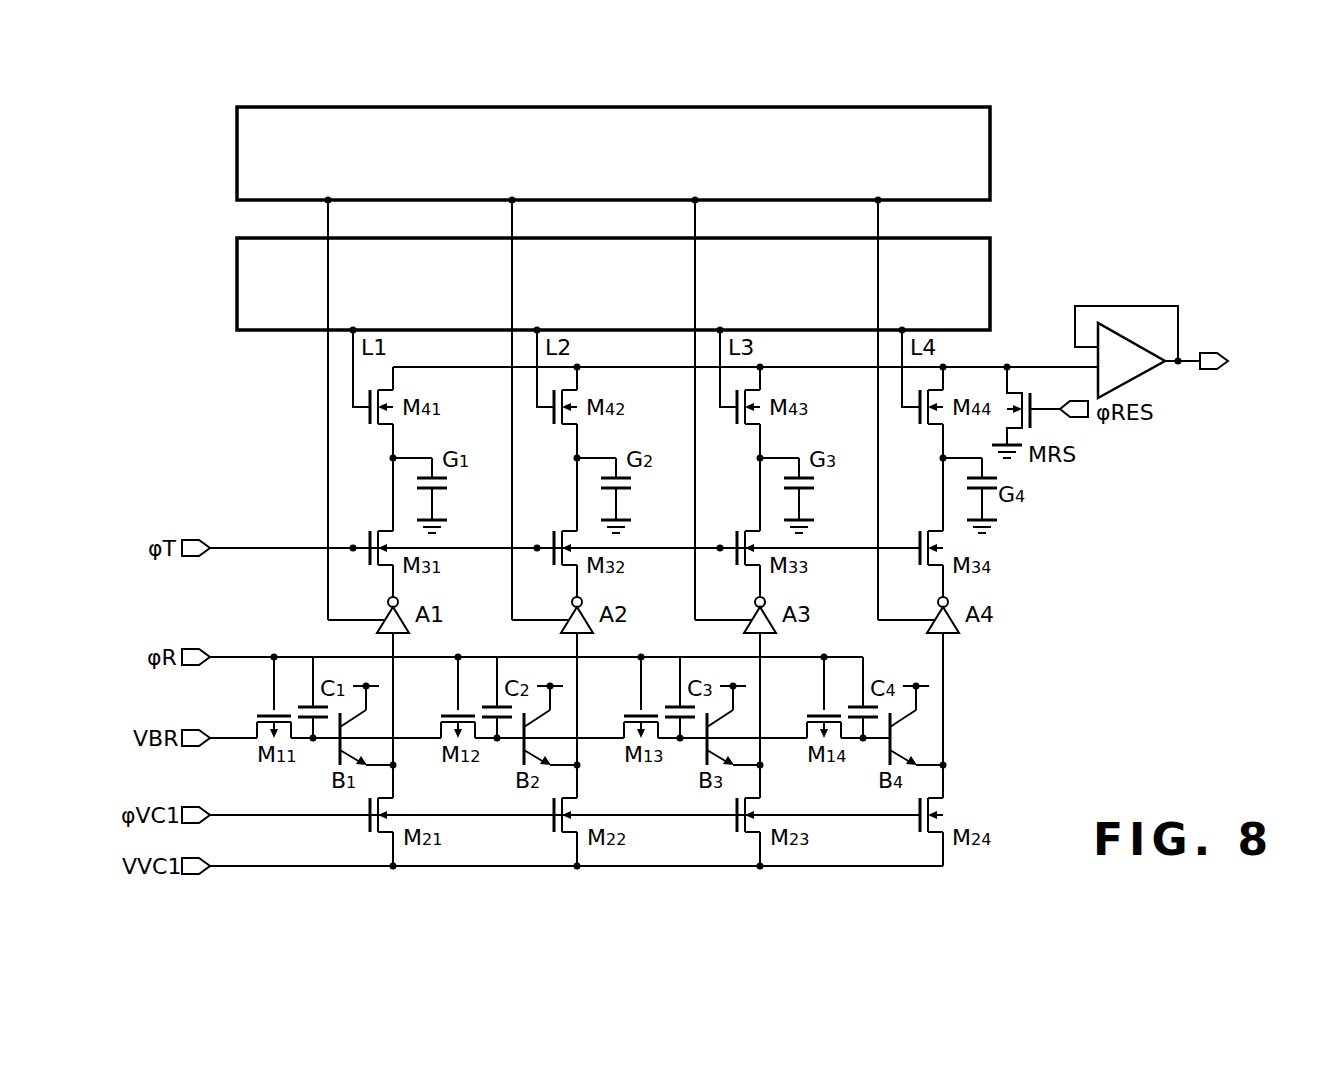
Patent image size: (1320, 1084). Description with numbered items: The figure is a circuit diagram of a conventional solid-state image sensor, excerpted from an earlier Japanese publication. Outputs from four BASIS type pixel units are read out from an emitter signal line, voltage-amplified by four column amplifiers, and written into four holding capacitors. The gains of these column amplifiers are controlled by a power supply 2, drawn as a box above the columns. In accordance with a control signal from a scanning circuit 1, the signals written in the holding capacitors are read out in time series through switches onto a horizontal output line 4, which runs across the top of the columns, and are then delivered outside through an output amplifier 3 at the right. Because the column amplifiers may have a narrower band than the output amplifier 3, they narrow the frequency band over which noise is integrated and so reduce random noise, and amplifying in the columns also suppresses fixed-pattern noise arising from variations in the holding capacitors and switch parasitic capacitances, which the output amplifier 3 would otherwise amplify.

The scanning circuit 1 is at (992, 267).
The power supply 2 is at (992, 152).
The output amplifier 3 is at (1148, 375).
The horizontal output line 4 is at (1008, 364).